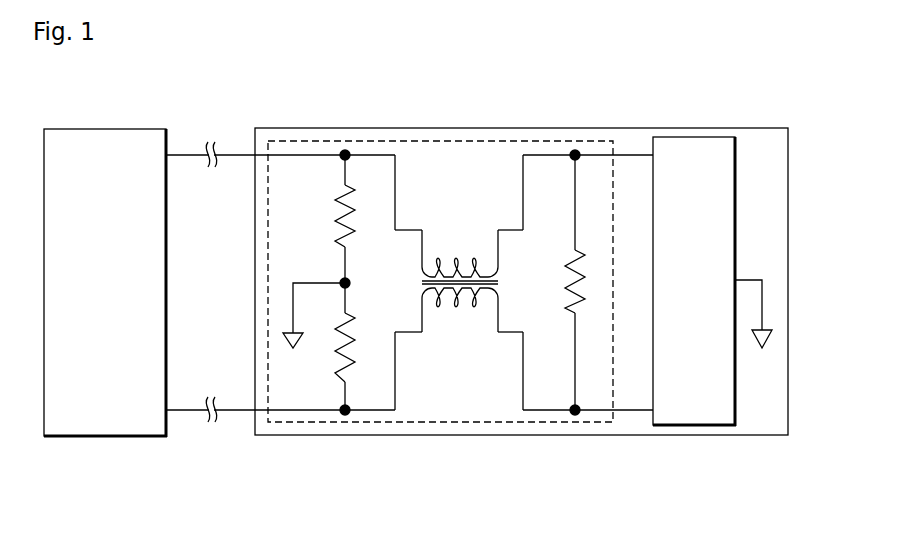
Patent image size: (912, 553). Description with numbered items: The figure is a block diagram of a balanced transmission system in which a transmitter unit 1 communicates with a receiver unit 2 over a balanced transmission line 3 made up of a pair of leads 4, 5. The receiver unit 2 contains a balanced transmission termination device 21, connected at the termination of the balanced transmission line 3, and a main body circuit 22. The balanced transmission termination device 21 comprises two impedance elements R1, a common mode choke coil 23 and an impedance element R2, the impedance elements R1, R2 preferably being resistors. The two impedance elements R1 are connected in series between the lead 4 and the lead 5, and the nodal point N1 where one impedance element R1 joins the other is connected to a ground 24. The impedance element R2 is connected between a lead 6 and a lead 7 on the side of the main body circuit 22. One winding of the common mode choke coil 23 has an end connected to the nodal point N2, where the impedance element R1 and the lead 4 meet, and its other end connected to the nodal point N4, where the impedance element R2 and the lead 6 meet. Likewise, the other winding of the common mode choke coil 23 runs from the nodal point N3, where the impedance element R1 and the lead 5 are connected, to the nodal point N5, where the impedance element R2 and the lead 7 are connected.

The transmitter unit 1 is at (88, 128).
The receiver unit 2 is at (521, 270).
The balanced transmission line 3 is at (210, 128).
The lead 4 is at (240, 156).
The lead 5 is at (240, 412).
The lead 6 is at (538, 153).
The lead 7 is at (546, 412).
The balanced transmission termination device 21 is at (370, 423).
The main body circuit 22 is at (697, 426).
The common mode choke coil 23 is at (460, 308).
The ground 24 is at (288, 339).
The nodal point N1 is at (348, 281).
The nodal point N2 is at (344, 152).
The nodal point N3 is at (338, 417).
The nodal point N4 is at (578, 151).
The nodal point N5 is at (580, 416).
The impedance element R1 is at (359, 283).
The impedance element R2 is at (565, 281).